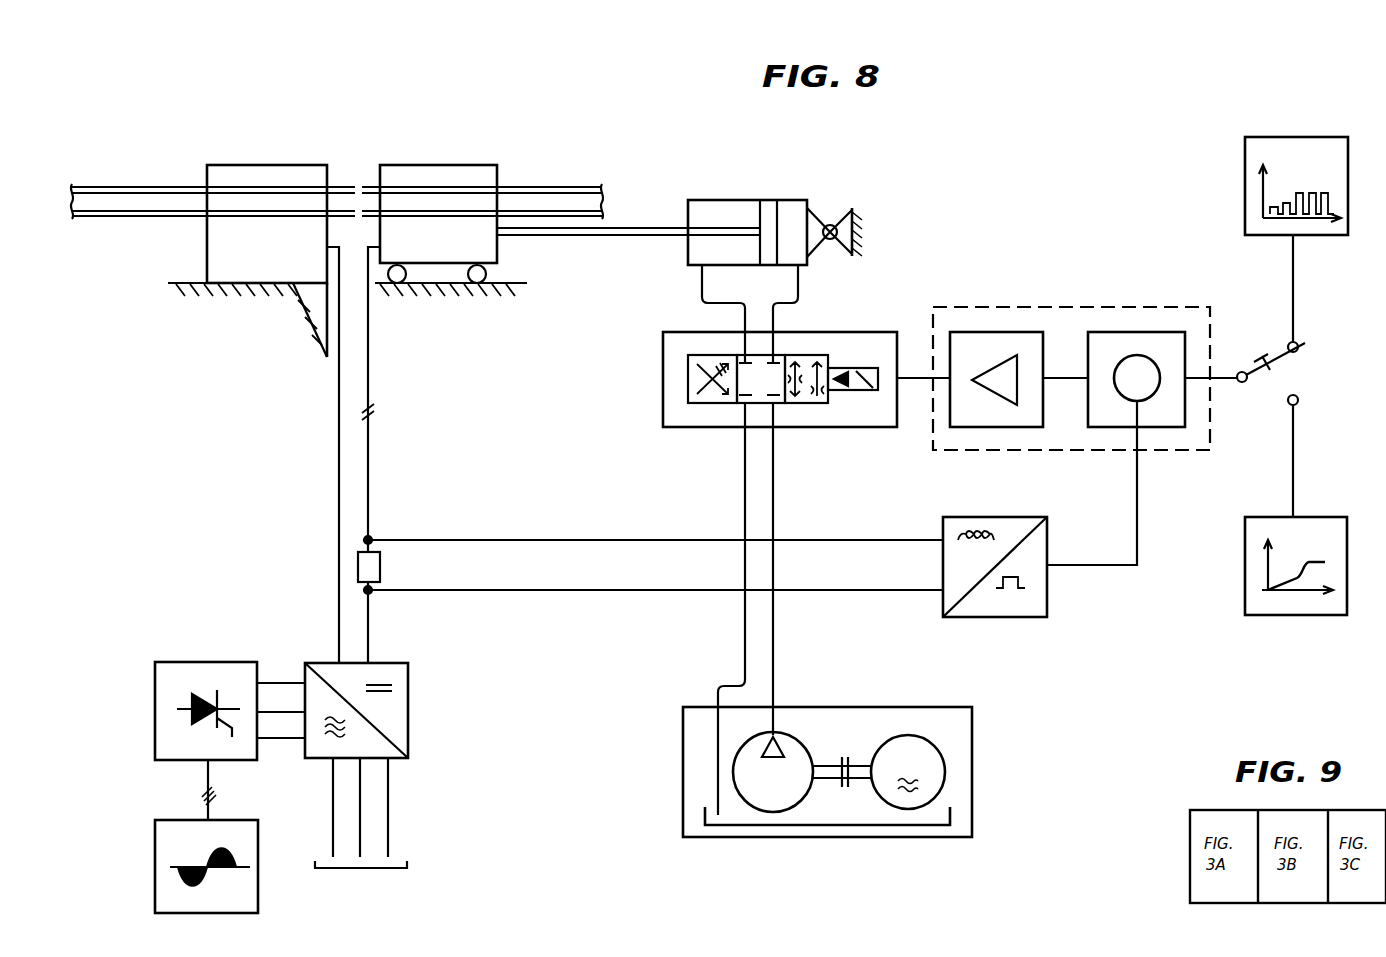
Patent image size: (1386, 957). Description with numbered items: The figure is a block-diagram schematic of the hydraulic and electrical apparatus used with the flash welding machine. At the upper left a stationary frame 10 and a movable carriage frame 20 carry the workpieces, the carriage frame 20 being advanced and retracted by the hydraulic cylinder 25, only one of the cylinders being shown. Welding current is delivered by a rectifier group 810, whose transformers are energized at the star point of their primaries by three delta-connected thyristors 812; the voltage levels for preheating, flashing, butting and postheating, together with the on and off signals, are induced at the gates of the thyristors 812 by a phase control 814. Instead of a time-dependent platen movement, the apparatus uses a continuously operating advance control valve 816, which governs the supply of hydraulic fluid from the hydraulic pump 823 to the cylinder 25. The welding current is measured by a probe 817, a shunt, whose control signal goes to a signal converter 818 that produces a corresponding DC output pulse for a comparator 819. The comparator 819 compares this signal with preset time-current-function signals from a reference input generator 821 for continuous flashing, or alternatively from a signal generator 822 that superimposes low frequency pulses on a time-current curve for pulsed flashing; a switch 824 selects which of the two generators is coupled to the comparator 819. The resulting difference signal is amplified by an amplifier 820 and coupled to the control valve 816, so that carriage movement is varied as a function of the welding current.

The stationary frame 10 is at (279, 165).
The carriage frame 20 is at (457, 165).
The hydraulic cylinder 25 is at (751, 200).
The rectifier group 810 is at (408, 689).
The thyristors 812 is at (216, 662).
The phase control 814 is at (155, 829).
The advance control valve 816 is at (681, 427).
The probe 817 is at (381, 567).
The signal converter 818 is at (1018, 517).
The comparator 819 is at (1153, 332).
The amplifier 820 is at (1014, 332).
The reference input generator 821 is at (1322, 617).
The signal generator 822 is at (1370, 110).
The hydraulic pump 823 is at (972, 731).
The switch 824 is at (1290, 373).